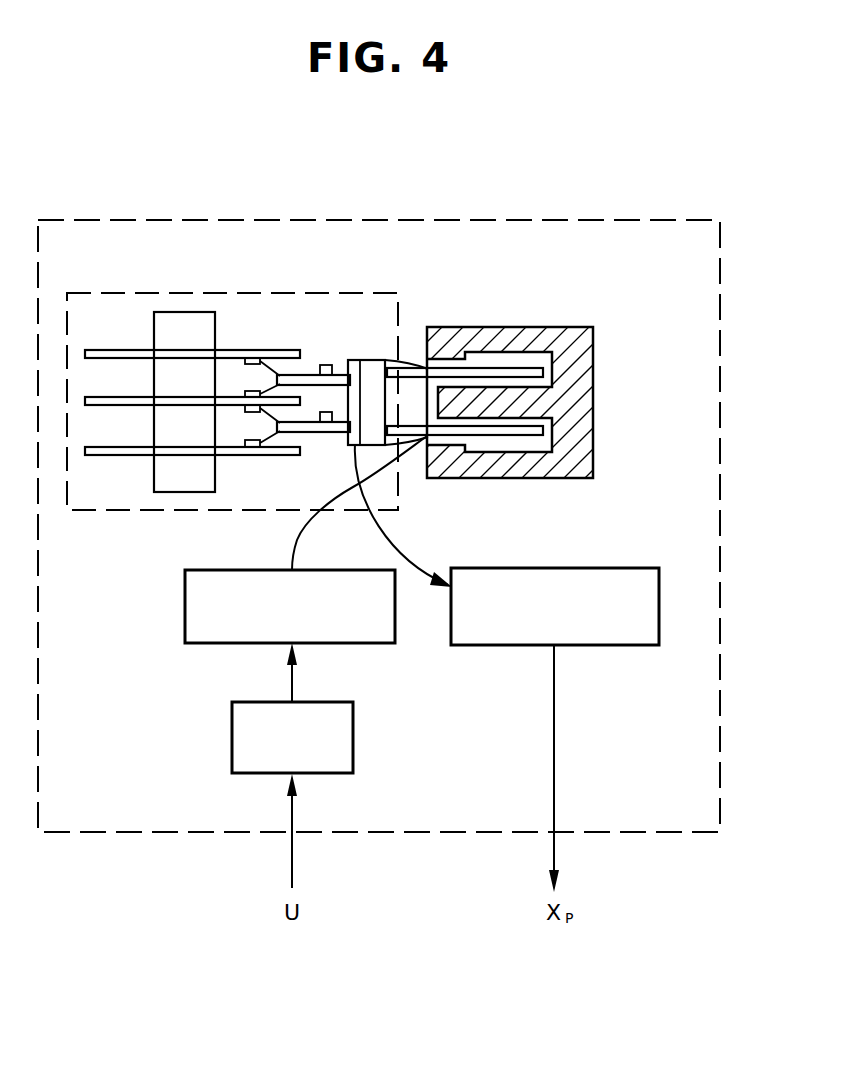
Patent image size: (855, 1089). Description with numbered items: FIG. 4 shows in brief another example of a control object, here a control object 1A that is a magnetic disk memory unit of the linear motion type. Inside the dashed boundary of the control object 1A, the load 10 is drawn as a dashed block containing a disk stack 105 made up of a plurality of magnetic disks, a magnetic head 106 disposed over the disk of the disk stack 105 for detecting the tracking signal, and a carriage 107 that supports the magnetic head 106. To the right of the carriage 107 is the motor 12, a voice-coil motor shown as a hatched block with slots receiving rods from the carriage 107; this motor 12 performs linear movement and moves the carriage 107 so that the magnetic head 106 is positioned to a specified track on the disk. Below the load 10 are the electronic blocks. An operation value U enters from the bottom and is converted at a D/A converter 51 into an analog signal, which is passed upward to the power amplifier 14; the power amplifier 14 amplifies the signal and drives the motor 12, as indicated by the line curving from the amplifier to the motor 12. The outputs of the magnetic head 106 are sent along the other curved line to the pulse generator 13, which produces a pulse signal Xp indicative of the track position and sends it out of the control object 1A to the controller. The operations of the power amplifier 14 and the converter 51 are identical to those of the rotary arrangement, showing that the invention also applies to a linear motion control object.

The control object 1A is at (317, 218).
The load 10 is at (331, 291).
The disk stack 105 is at (109, 350).
The magnetic head 106 is at (258, 350).
The carriage 107 is at (319, 364).
The motor 12 is at (548, 327).
The pulse generator 13 is at (622, 568).
The power amplifier 14 is at (185, 600).
The D/A converter 51 is at (353, 740).